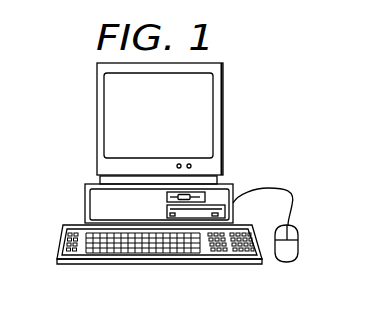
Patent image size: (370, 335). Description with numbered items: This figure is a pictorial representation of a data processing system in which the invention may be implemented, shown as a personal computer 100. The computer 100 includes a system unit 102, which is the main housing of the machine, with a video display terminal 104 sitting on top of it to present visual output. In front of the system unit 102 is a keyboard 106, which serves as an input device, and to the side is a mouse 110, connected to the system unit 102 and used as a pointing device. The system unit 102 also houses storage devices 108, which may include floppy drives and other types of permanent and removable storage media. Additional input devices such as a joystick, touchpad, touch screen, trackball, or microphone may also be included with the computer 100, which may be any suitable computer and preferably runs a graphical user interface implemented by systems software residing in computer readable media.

The computer 100 is at (277, 71).
The system unit 102 is at (85, 207).
The video display terminal 104 is at (97, 122).
The keyboard 106 is at (80, 264).
The storage devices 108 is at (217, 203).
The mouse 110 is at (287, 262).